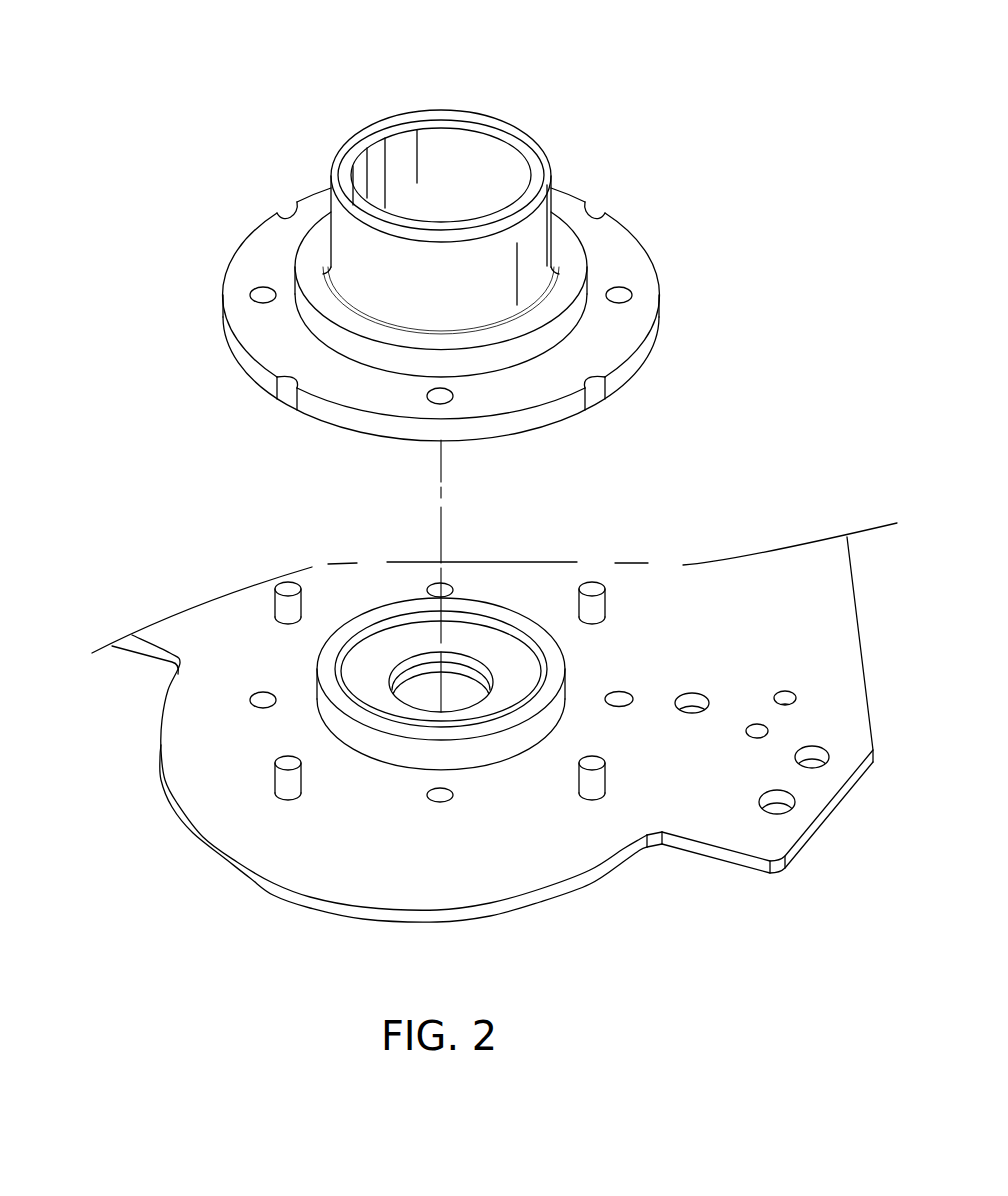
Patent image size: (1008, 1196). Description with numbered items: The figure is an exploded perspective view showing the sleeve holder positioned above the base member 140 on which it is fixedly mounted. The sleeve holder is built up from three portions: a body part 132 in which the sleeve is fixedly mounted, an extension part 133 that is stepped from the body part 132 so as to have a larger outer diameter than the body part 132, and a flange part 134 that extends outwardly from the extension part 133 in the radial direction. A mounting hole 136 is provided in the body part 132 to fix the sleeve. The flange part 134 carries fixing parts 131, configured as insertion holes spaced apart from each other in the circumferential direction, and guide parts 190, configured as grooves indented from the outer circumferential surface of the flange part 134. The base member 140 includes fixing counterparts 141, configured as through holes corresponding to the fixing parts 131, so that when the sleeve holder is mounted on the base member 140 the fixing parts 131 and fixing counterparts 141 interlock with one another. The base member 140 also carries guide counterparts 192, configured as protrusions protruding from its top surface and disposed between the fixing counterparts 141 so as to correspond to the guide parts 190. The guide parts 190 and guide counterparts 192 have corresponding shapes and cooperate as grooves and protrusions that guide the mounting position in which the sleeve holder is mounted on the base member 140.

The fixing part 131 is at (622, 292).
The body part 132 is at (533, 238).
The extension part 133 is at (553, 337).
The flange part 134 is at (249, 259).
The mounting hole 136 is at (485, 168).
The base member 140 is at (297, 853).
The fixing counterpart 141 is at (268, 702).
The guide part 190 is at (288, 388).
The guide counterpart 192 is at (287, 586).